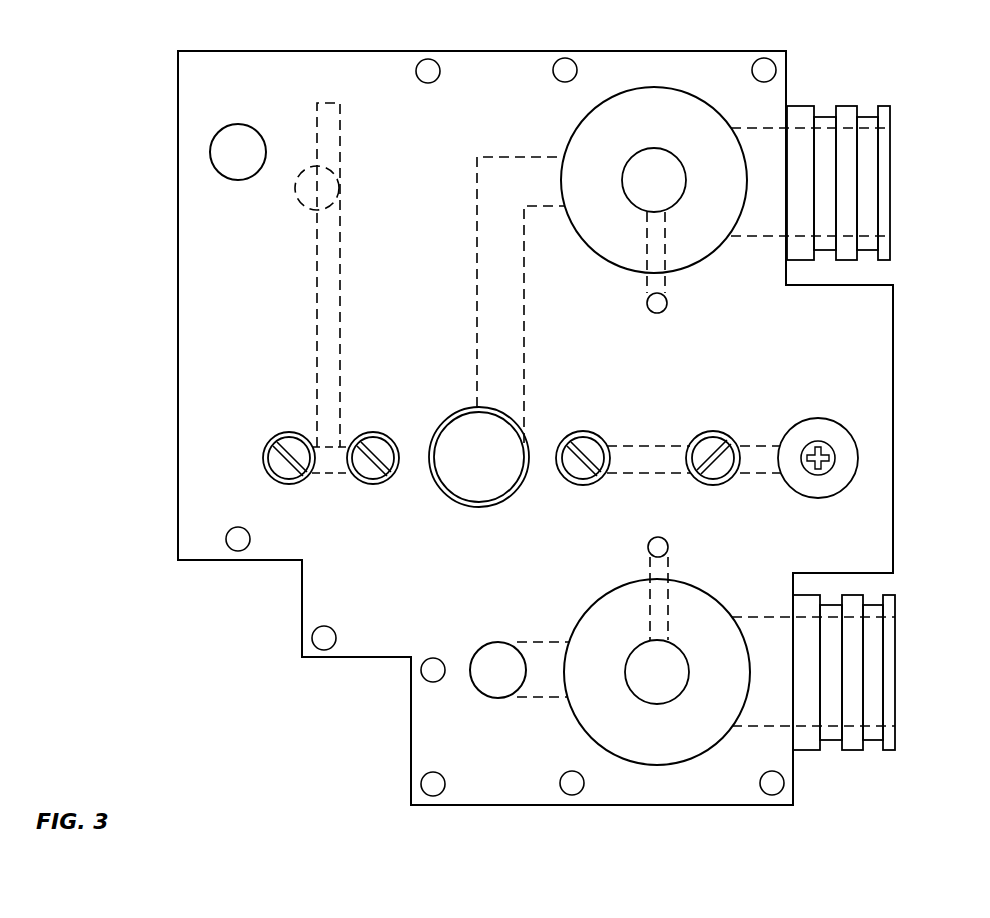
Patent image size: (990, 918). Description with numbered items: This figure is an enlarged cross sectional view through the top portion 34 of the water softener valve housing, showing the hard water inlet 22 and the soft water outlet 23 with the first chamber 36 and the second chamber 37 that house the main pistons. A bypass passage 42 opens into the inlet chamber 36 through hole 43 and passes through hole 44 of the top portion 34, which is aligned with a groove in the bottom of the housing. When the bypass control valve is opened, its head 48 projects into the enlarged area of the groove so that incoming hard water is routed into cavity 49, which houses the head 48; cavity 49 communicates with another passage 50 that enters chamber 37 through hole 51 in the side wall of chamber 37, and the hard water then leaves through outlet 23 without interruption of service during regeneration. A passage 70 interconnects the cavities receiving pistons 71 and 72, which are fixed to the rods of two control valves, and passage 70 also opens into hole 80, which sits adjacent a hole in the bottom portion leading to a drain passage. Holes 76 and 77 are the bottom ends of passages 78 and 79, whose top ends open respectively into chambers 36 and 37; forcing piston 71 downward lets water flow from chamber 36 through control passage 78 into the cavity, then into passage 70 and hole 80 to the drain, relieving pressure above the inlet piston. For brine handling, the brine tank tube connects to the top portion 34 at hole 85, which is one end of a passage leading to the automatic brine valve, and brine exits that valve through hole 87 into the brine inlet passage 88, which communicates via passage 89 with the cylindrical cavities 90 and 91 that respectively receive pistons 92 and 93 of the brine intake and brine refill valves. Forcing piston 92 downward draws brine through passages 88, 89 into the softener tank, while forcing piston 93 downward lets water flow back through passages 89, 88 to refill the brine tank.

The hard water inlet 22 is at (873, 698).
The soft water outlet 23 is at (870, 162).
The top portion 34 is at (192, 338).
The first chamber 36 is at (710, 712).
The second chamber 37 is at (692, 128).
The bypass passage 42 is at (533, 697).
The hole 43 is at (568, 666).
The hole 44 is at (495, 683).
The head of bypass valve 48 is at (477, 480).
The cavity 49 is at (406, 581).
The passage 50 is at (497, 180).
The hole 51 is at (565, 177).
The passage 70 is at (658, 442).
The piston 71 is at (582, 473).
The piston 72 is at (713, 473).
The hole 76 is at (667, 548).
The hole 77 is at (667, 305).
The control passage 78 is at (668, 615).
The passage 79 is at (665, 255).
The hole 80 is at (855, 455).
The hole 85 is at (210, 143).
The hole 87 is at (295, 190).
The brine inlet passage 88 is at (320, 302).
The passage 89 is at (327, 477).
The cylindrical cavity 90 is at (190, 445).
The cylindrical cavity 91 is at (315, 555).
The piston 92 is at (277, 467).
The piston 93 is at (375, 472).